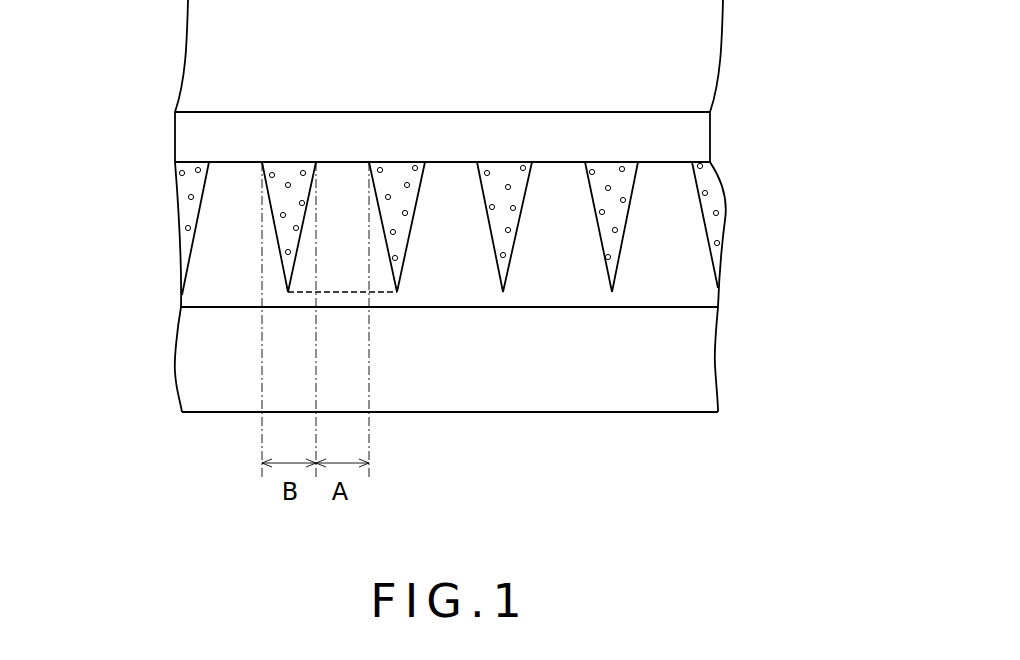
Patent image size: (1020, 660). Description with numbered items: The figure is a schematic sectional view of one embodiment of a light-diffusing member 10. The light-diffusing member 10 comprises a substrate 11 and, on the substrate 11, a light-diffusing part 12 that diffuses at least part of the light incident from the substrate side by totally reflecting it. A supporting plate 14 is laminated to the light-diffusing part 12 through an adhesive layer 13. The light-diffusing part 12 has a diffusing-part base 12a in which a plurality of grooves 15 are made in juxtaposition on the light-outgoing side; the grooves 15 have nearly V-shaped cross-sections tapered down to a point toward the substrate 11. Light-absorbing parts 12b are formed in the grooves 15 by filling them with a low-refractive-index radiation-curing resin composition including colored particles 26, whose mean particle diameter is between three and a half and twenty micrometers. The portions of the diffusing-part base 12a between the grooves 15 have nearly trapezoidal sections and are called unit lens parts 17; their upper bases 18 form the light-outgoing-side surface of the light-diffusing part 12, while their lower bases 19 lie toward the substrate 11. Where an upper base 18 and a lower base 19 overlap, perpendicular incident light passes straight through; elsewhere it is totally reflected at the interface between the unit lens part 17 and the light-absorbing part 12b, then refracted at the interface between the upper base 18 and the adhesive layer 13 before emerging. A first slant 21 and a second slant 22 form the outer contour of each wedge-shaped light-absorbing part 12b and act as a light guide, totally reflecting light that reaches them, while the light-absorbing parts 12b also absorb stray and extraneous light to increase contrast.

The light-diffusing member 10 is at (163, 248).
The substrate 11 is at (703, 355).
The light-diffusing part 12 is at (503, 258).
The diffusing-part base 12a is at (688, 290).
The light-absorbing part 12b is at (508, 245).
The adhesive layer 13 is at (697, 137).
The supporting plate 14 is at (700, 52).
The groove 15 is at (397, 294).
The unit lens part 17 is at (453, 247).
The upper base 18 is at (353, 163).
The lower base 19 is at (343, 303).
The first slant 21 is at (598, 236).
The second slant 22 is at (625, 240).
The colored particles 26 is at (507, 183).